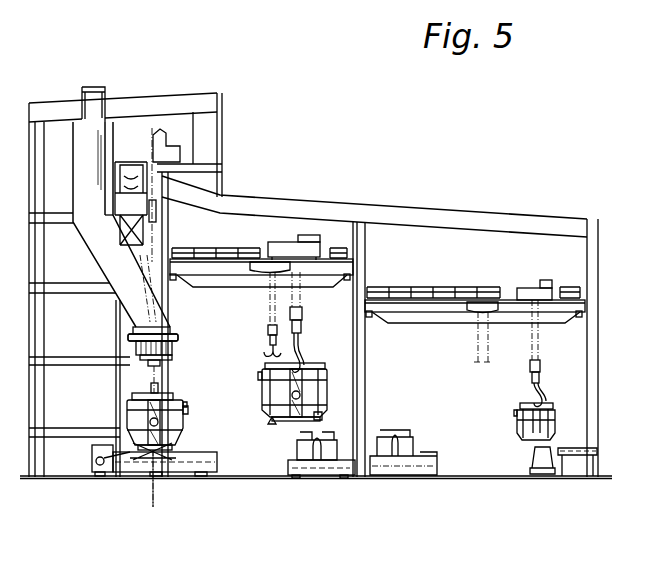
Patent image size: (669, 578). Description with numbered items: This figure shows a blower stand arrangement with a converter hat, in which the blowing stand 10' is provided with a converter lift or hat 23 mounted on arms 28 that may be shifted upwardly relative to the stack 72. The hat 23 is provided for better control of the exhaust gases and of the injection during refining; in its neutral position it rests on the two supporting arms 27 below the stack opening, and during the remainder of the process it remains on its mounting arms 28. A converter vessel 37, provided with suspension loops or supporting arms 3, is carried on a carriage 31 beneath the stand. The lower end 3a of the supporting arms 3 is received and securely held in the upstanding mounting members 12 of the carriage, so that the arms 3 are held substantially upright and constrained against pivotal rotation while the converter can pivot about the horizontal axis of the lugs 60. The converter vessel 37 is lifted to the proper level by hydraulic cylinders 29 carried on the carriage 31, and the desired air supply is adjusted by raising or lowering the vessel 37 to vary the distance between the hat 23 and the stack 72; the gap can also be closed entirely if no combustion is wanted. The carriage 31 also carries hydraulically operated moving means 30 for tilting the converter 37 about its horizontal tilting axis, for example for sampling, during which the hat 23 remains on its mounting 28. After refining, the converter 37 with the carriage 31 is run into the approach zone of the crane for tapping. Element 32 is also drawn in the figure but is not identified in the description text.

The stack 72 is at (105, 264).
The supporting arms 27 is at (135, 354).
The converter hat 23 is at (176, 355).
The arms 28 is at (117, 366).
The blowing stand 10' is at (178, 336).
The supporting arms 3 is at (166, 407).
The lower end of the supporting arms 3a is at (185, 405).
The converter vessel 37 is at (316, 356).
The mounting members 12 is at (183, 434).
The hydraulic cylinders 29 is at (165, 474).
The hydraulically operated moving means 30 is at (122, 474).
The carriage 31 is at (217, 473).
The ladle central bar 32 is at (300, 412).
The lugs 60 is at (315, 418).